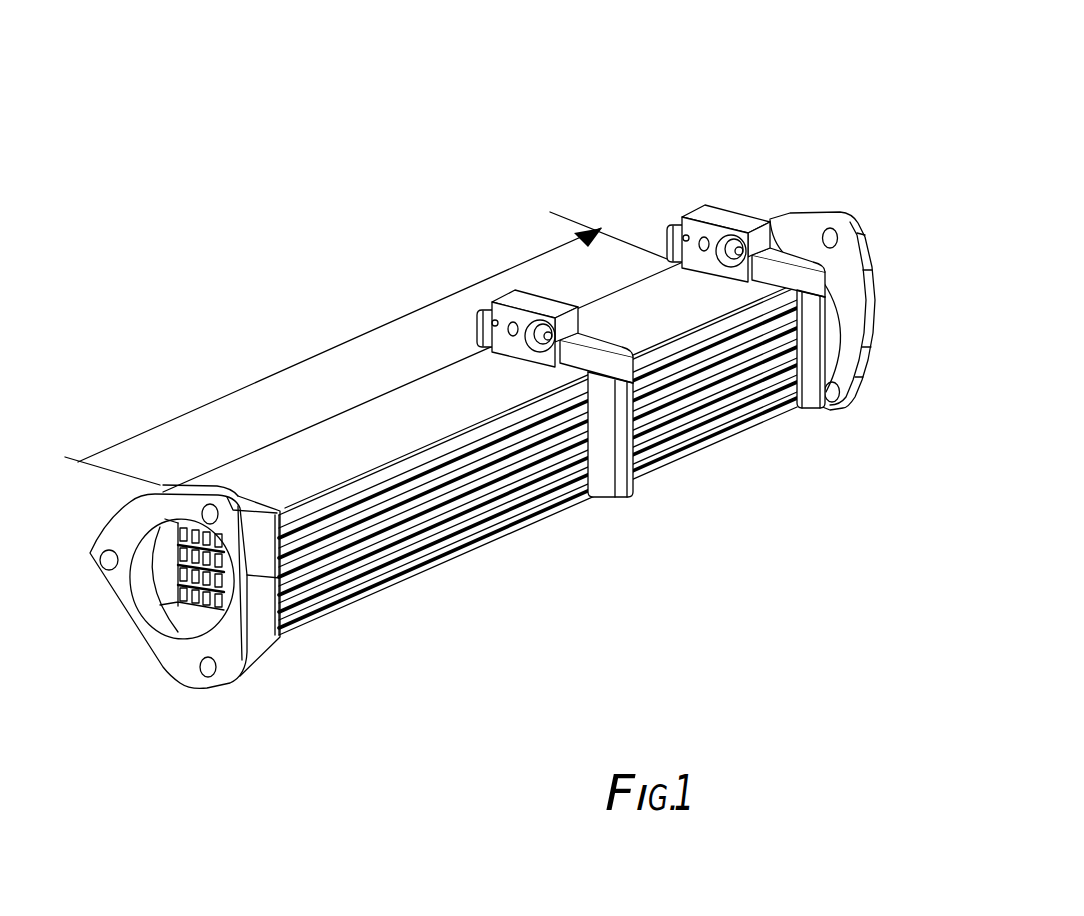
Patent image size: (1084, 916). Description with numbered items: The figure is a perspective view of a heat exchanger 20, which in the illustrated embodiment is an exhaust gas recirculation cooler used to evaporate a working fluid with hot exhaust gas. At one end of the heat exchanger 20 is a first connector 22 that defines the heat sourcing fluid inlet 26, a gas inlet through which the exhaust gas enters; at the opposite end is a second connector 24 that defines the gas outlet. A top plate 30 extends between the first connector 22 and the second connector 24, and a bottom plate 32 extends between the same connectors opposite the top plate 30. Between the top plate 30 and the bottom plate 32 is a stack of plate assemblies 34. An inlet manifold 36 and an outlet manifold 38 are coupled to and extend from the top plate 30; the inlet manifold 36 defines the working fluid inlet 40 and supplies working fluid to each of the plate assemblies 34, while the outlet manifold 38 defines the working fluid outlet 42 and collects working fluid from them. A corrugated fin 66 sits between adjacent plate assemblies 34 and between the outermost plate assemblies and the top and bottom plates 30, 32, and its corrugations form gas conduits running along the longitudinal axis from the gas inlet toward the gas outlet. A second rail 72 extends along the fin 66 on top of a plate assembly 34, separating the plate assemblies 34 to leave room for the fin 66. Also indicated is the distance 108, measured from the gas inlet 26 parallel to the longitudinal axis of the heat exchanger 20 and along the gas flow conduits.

The heat exchanger 20 is at (536, 107).
The first connector 22 is at (188, 662).
The second connector 24 is at (862, 378).
The heat sourcing fluid inlet 26 is at (145, 587).
The top plate 30 is at (306, 437).
The bottom plate 32 is at (527, 528).
The plate assemblies 34 is at (346, 540).
The inlet manifold 36 is at (730, 217).
The outlet manifold 38 is at (597, 351).
The working fluid inlet 40 is at (726, 253).
The working fluid outlet 42 is at (536, 337).
The fin 66 is at (207, 600).
The second rail 72 is at (667, 352).
The distance 108 is at (343, 346).